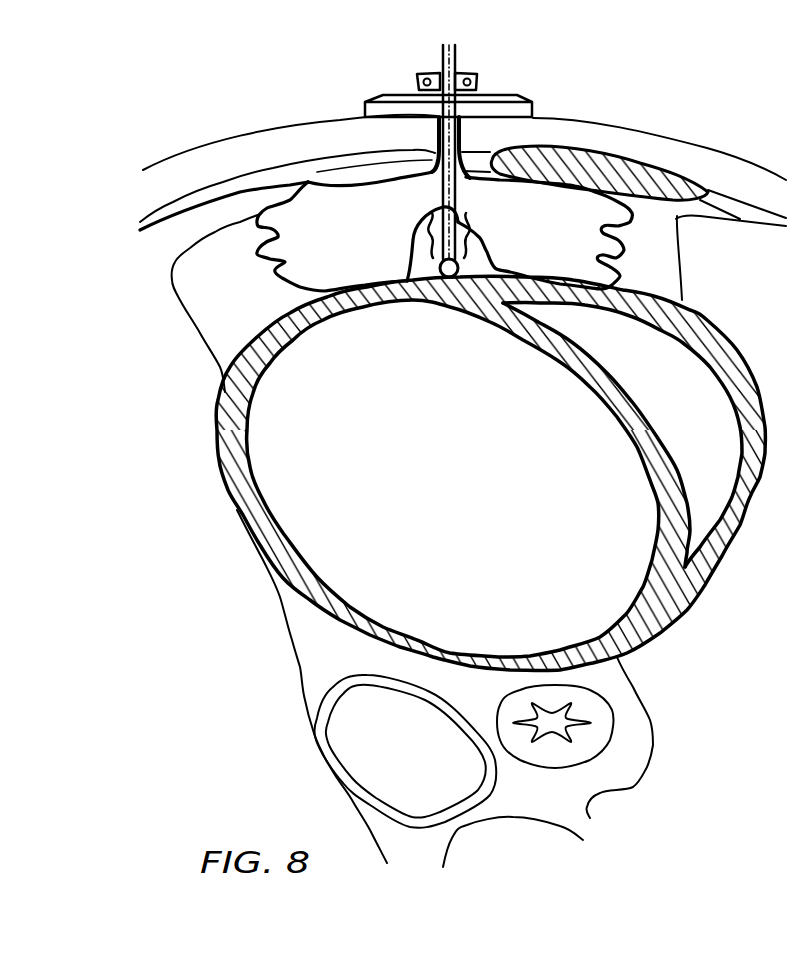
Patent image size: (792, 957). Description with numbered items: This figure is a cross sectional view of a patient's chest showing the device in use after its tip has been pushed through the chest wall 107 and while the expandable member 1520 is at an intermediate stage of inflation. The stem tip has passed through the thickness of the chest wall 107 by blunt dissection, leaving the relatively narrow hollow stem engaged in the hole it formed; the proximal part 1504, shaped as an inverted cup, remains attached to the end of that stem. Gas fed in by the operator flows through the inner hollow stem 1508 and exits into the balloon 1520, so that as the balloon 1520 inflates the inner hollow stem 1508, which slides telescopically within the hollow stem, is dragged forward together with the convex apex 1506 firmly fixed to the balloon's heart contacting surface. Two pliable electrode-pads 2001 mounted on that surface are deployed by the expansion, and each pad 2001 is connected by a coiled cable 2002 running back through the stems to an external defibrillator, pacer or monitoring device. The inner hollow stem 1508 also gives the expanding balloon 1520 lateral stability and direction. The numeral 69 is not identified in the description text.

The chest wall 107 is at (237, 153).
The proximal part of stem tip 1504 is at (432, 163).
The inner hollow stem 1508 is at (457, 133).
The convex apex 1506 is at (449, 282).
The expandable member 1520 is at (348, 242).
The second ring portion 69 is at (563, 397).
The electrode-pads 2001 is at (320, 290).
The coiled cable 2002 is at (522, 263).